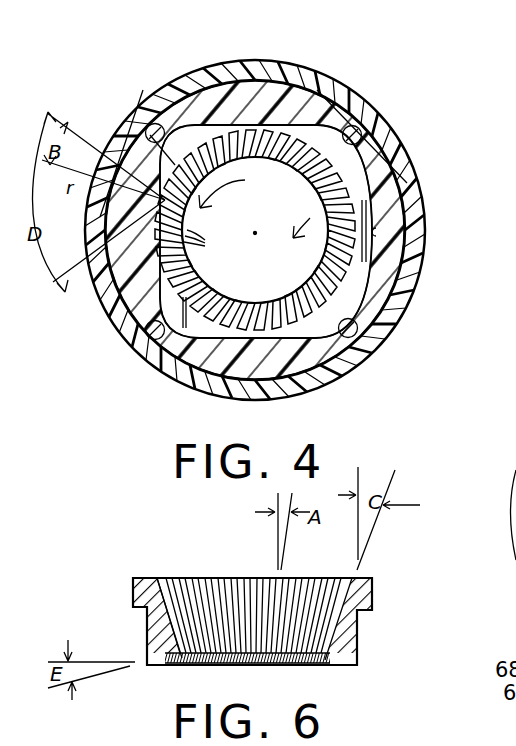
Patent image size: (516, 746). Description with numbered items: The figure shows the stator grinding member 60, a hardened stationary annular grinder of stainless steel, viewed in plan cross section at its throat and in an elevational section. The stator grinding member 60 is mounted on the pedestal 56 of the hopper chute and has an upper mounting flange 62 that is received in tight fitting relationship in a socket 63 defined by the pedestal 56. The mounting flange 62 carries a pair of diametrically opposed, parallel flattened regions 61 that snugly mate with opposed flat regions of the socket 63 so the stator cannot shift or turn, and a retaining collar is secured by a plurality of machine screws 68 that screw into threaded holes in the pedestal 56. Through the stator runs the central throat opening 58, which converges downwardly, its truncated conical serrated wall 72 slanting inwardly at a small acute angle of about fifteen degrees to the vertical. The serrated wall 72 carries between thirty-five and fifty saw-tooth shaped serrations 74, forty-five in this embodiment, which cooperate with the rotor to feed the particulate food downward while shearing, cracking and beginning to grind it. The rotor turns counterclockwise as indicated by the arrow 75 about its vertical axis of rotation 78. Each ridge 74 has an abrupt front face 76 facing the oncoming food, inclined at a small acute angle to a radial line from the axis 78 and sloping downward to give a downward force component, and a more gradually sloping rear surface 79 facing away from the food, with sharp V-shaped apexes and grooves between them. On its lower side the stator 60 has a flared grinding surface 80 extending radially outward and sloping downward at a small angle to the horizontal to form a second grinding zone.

In FIG. 4, the pedestal 56 is at (307, 98).
In FIG. 4, the throat opening 58 is at (372, 203).
In FIG. 6, the throat opening 58 is at (313, 575).
In FIG. 4, the stator grinding member 60 is at (392, 146).
In FIG. 6, the stator grinding member 60 is at (372, 650).
In FIG. 4, the flattened regions 61 is at (213, 67).
In FIG. 4, the mounting flange 62 is at (400, 260).
In FIG. 6, the mounting flange 62 is at (375, 597).
In FIG. 4, the socket 63 is at (378, 232).
In FIG. 4, the machine screws 68 is at (163, 128).
In FIG. 6, the serrated wall 72 is at (173, 593).
In FIG. 4, the saw-tooth shaped serrations 74 is at (277, 140).
In FIG. 6, the saw-tooth shaped serrations 74 is at (251, 595).
In FIG. 4, the rotation direction arrow 75 is at (254, 209).
In FIG. 4, the abrupt front face 76 is at (152, 140).
In FIG. 4, the vertical axis of rotation 78 is at (254, 234).
In FIG. 4, the rear surface 79 is at (208, 240).
In FIG. 6, the flared grinding surface 80 is at (323, 667).